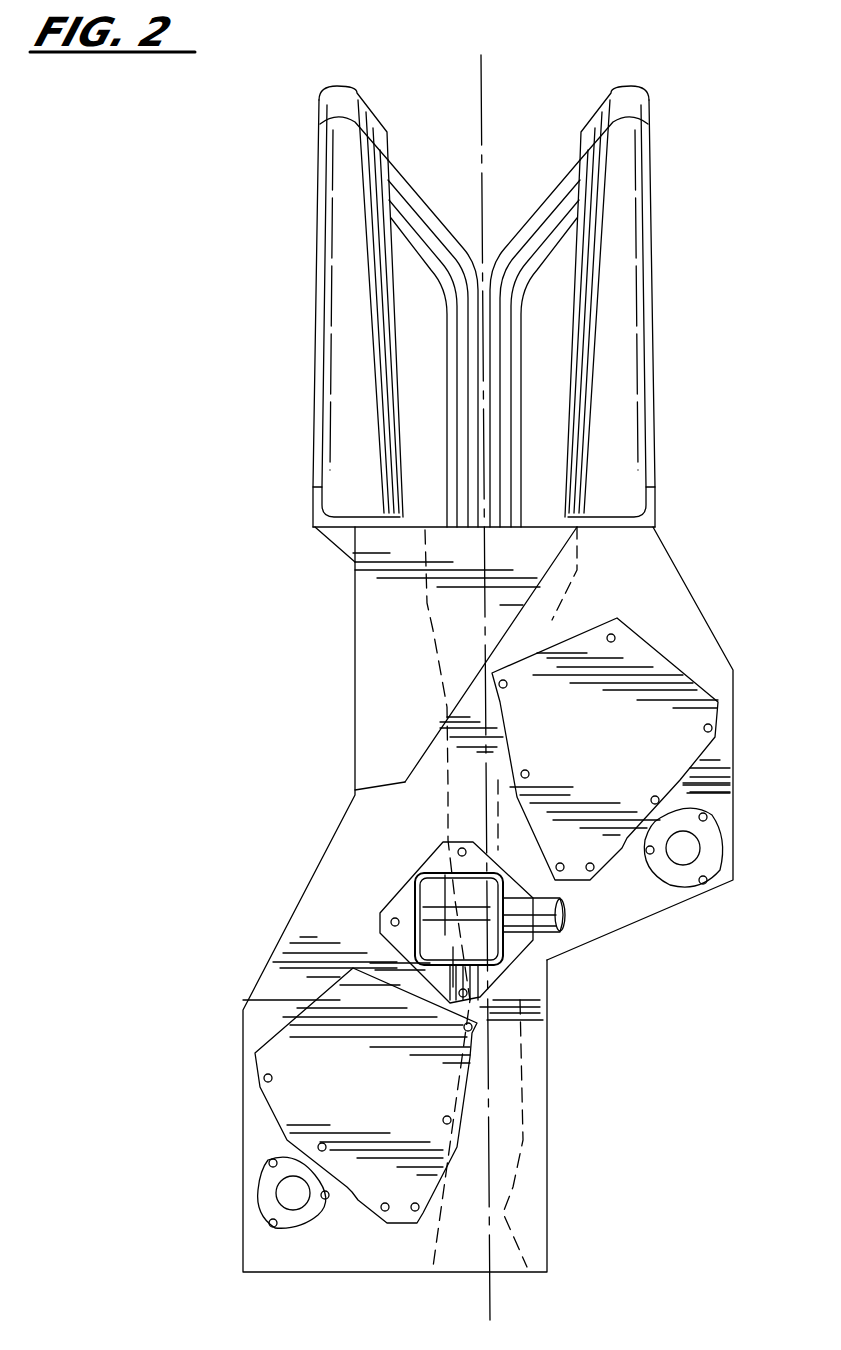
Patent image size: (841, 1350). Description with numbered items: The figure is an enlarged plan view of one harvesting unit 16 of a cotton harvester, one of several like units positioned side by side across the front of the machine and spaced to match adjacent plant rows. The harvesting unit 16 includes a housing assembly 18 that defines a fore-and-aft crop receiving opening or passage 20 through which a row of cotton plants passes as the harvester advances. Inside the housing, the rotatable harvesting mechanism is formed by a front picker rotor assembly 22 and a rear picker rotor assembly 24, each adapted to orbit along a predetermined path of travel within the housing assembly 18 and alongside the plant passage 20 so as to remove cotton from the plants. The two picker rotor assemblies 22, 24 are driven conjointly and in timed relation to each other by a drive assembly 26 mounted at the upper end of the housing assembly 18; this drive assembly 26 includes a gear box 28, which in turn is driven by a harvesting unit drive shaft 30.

The harvesting unit 16 is at (342, 696).
The housing assembly 18 is at (660, 602).
The crop receiving opening or passage 20 is at (438, 608).
The front picker rotor assembly 22 is at (603, 740).
The rear picker rotor assembly 24 is at (380, 1096).
The drive assembly 26 is at (407, 905).
The gear box 28 is at (430, 887).
The harvesting unit drive shaft 30 is at (557, 937).